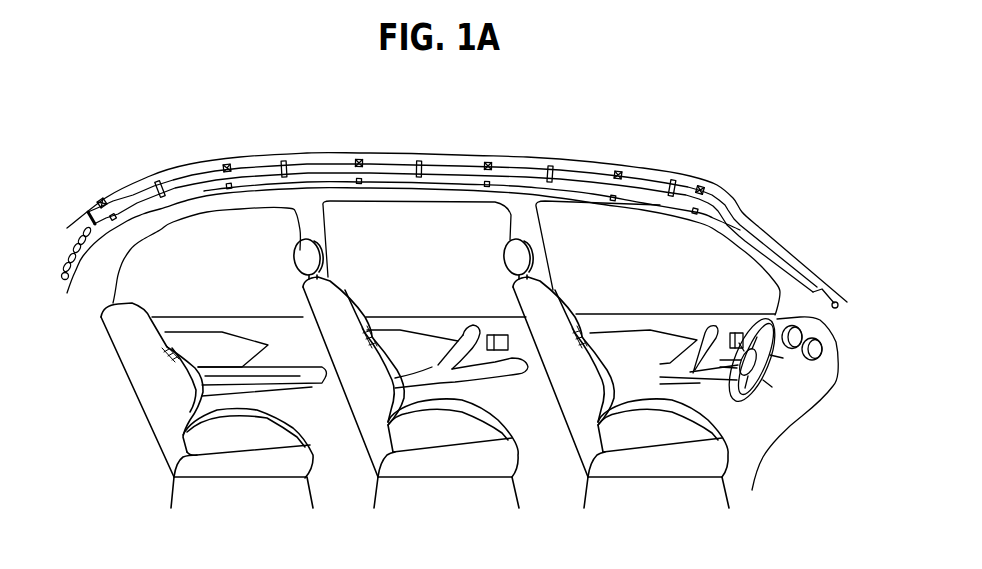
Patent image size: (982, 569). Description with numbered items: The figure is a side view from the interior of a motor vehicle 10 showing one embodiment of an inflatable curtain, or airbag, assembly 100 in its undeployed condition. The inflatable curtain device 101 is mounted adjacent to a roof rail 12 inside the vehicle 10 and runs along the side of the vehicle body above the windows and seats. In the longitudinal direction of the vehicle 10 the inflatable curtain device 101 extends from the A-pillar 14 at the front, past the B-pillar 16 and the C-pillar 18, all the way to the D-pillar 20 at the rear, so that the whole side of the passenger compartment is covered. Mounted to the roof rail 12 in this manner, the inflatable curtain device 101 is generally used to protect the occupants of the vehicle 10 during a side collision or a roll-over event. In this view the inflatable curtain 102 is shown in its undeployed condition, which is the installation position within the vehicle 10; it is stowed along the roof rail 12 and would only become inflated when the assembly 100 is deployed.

The motor vehicle 10 is at (838, 332).
The roof rail 12 is at (523, 163).
The A-pillar 14 is at (787, 247).
The B-pillar 16 is at (530, 223).
The C-pillar 18 is at (307, 213).
The D-pillar 20 is at (140, 210).
The inflatable curtain assembly 100 is at (791, 168).
The inflatable curtain device 101 is at (688, 182).
The inflatable curtain 102 is at (400, 170).